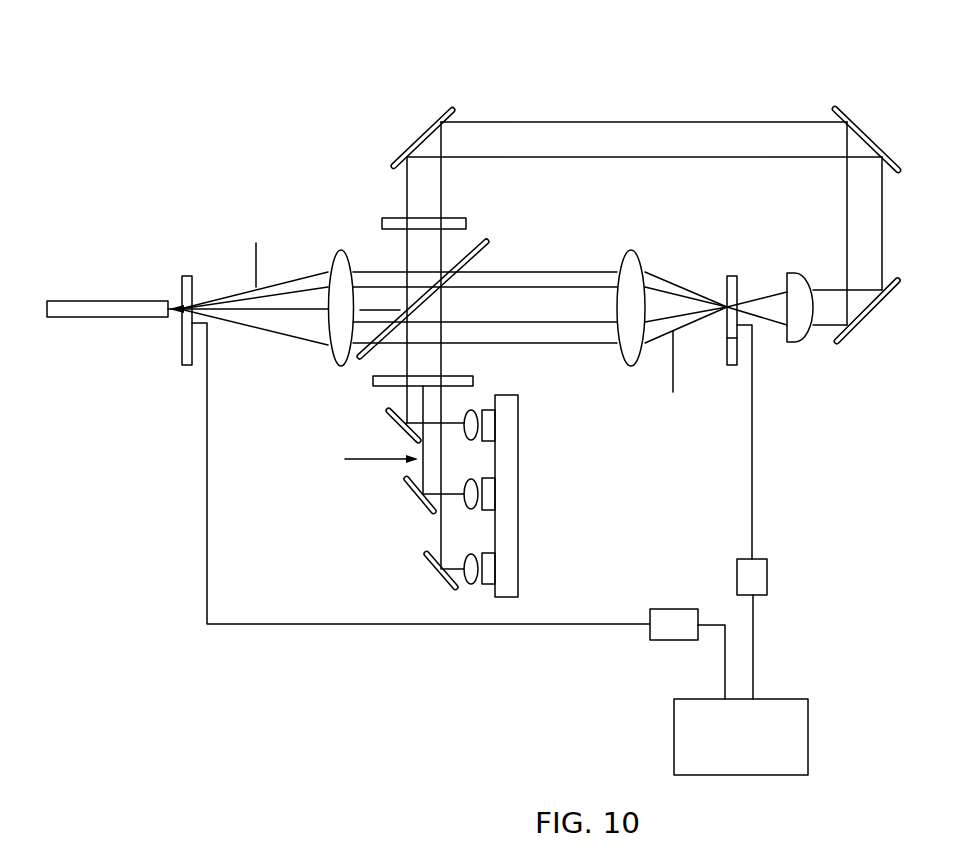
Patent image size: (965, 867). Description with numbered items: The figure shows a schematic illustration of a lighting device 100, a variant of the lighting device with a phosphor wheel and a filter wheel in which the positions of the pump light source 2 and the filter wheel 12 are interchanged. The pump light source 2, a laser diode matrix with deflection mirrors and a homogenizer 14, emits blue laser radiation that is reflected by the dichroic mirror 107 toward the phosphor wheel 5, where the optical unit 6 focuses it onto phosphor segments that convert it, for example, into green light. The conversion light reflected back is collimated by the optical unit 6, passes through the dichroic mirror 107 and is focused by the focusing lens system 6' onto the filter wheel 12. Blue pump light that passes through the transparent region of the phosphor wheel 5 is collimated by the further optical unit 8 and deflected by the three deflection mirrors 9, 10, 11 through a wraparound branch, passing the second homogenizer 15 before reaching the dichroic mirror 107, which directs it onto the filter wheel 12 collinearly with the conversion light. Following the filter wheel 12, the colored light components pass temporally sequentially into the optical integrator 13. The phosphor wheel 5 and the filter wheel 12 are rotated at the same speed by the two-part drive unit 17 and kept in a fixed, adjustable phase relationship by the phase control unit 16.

The lighting device variant 100 is at (646, 86).
The optical integrator 13 is at (72, 303).
The filter wheel 12 is at (180, 352).
The focusing lens system 6' is at (316, 284).
The third deflection mirror 11 is at (427, 130).
The second homogenizer 15 is at (386, 224).
The dichroic mirror 107 is at (490, 241).
The homogenizer 14 is at (385, 382).
The pump light source 2 is at (472, 616).
The optical unit 6 is at (672, 272).
The phosphor wheel 5 is at (733, 366).
The further optical unit 8 is at (798, 330).
The first deflection mirror 9 is at (873, 308).
The second deflection mirror 10 is at (872, 138).
The two-part drive unit 17 is at (762, 579).
The phase control unit 16 is at (782, 737).